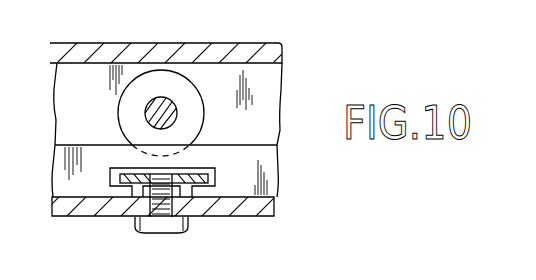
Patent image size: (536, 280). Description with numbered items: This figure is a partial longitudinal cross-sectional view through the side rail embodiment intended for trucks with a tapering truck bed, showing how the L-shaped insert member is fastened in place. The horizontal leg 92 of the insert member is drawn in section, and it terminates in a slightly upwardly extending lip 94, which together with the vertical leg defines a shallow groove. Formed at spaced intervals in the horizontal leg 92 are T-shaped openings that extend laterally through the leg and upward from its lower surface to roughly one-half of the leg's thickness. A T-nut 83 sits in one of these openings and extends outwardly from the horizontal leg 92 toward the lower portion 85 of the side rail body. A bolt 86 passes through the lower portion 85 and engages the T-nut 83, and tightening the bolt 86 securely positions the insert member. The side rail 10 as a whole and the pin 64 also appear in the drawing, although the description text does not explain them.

The assembly 10 is at (176, 136).
The pin 64 is at (203, 88).
The bracket 83 is at (213, 173).
The bottom plate 85 is at (274, 207).
The nut 86 is at (165, 233).
The upper member 92 is at (272, 117).
The lower member 94 is at (271, 172).